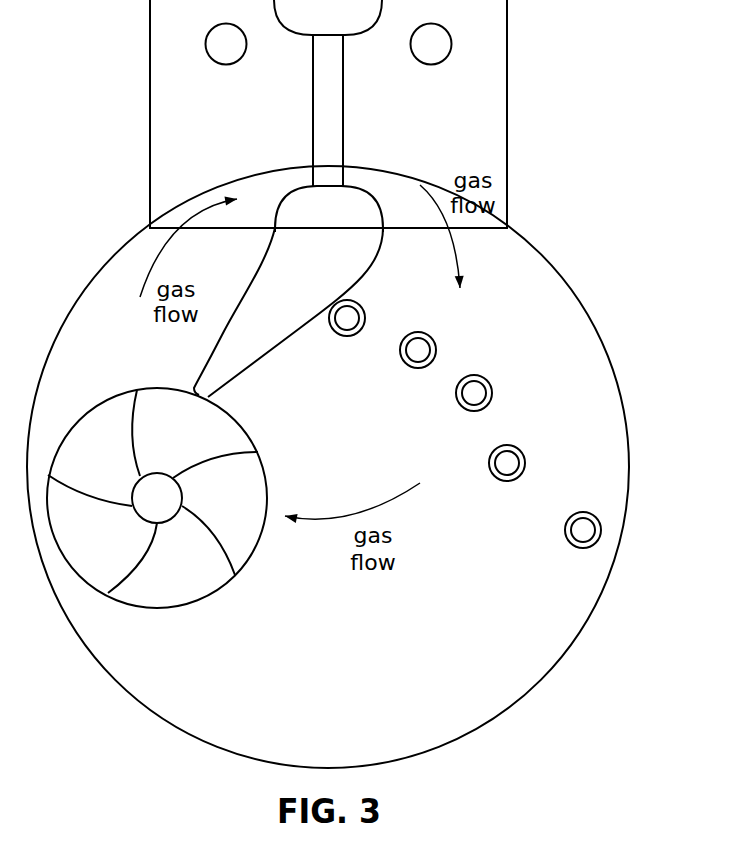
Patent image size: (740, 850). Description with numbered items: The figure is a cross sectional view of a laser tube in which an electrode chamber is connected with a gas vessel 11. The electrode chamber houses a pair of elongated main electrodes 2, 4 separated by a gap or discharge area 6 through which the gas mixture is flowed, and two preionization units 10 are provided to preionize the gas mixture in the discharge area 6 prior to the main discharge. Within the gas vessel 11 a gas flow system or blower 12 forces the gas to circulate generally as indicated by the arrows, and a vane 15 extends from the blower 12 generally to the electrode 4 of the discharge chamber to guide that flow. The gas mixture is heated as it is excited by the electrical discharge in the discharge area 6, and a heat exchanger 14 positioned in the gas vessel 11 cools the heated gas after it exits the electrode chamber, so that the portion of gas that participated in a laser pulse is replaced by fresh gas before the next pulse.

The main electrode 2 is at (320, 24).
The main electrode 4 is at (321, 218).
The discharge area 6 is at (333, 98).
The preionization unit 10 is at (214, 56).
The gas vessel 11 is at (589, 313).
The blower 12 is at (159, 440).
The heat exchanger 14 is at (452, 320).
The vane 15 is at (269, 303).